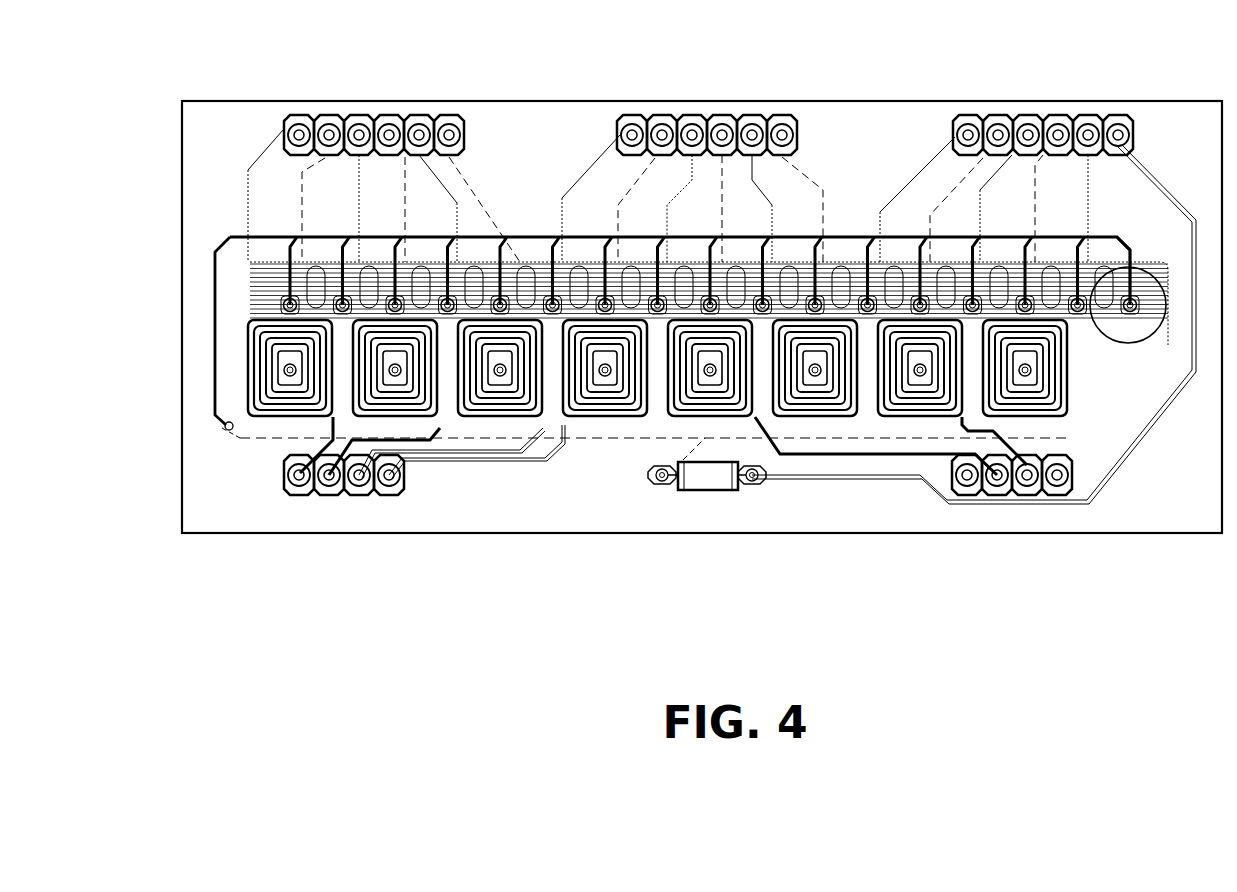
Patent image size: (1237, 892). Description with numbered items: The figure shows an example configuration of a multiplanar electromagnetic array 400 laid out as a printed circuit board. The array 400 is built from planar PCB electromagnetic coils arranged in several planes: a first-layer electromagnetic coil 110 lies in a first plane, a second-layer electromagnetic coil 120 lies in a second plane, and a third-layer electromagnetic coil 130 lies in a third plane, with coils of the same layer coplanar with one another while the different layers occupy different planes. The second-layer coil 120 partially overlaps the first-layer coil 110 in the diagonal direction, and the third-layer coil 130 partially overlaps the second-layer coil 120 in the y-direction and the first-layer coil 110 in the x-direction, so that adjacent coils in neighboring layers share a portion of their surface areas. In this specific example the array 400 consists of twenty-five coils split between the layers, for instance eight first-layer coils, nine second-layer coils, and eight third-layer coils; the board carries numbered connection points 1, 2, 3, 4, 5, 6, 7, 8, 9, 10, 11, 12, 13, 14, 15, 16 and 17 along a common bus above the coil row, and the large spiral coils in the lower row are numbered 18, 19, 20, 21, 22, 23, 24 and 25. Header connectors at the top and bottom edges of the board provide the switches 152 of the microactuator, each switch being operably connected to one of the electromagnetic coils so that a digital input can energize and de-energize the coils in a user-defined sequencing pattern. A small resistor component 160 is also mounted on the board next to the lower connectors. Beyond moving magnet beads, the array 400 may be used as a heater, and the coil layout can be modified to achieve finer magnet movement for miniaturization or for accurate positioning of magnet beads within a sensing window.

The multiplanar electromagnetic array 400 is at (727, 80).
The switches 152 is at (380, 124).
The second-layer electromagnetic coil 120 is at (573, 254).
The first-layer electromagnetic coil 110 is at (1082, 354).
The third-layer electromagnetic coil 130 is at (605, 448).
The resistor R2 160 is at (737, 486).
The pin 1 via 1 is at (1135, 276).
The pin 2 via 2 is at (1073, 275).
The pin 3 via 3 is at (1021, 275).
The pin 4 via 4 is at (968, 275).
The pin 5 via 5 is at (916, 275).
The pin 6 via 6 is at (863, 275).
The pin 7 via 7 is at (811, 275).
The pin 8 via 8 is at (758, 275).
The pin 9 via 9 is at (706, 275).
The pin 10 via 10 is at (649, 275).
The pin 11 via 11 is at (596, 275).
The pin 12 via 12 is at (544, 275).
The pin 13 via 13 is at (491, 275).
The pin 14 via 14 is at (439, 275).
The pin 15 via 15 is at (387, 275).
The pin 16 via 16 is at (334, 275).
The pin 17 via 17 is at (282, 275).
The coil 18 is at (290, 380).
The coil 19 is at (395, 380).
The coil 20 is at (500, 380).
The coil 21 is at (605, 380).
The coil 22 is at (710, 380).
The coil 23 is at (815, 380).
The coil 24 is at (920, 380).
The coil 25 is at (1025, 380).